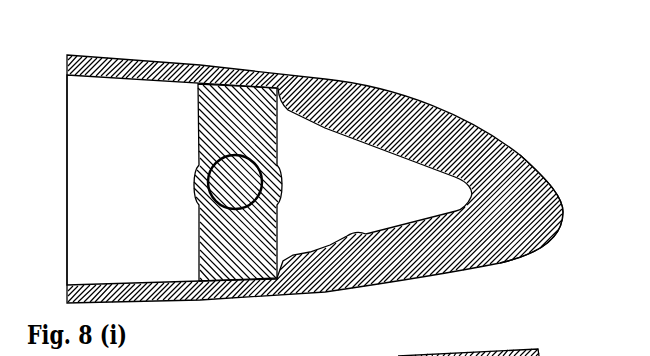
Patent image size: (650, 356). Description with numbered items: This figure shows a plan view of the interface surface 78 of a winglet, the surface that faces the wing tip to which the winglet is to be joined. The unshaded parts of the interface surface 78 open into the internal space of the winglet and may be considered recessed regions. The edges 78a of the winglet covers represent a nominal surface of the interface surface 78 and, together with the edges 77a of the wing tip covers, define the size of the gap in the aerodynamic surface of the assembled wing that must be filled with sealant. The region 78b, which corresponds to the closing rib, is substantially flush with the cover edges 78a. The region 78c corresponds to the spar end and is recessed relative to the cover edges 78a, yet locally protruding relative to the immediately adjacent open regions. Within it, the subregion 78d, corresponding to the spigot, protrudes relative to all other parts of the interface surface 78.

The interface surface 78 is at (515, 118).
The edges of the winglet covers 78a is at (221, 76).
The region corresponding to the closing rib 78b is at (532, 224).
The region corresponding to the spar end 78c is at (252, 146).
The subregion corresponding to the spigot 78d is at (253, 193).
The edges of the wing tip covers 77a is at (452, 351).